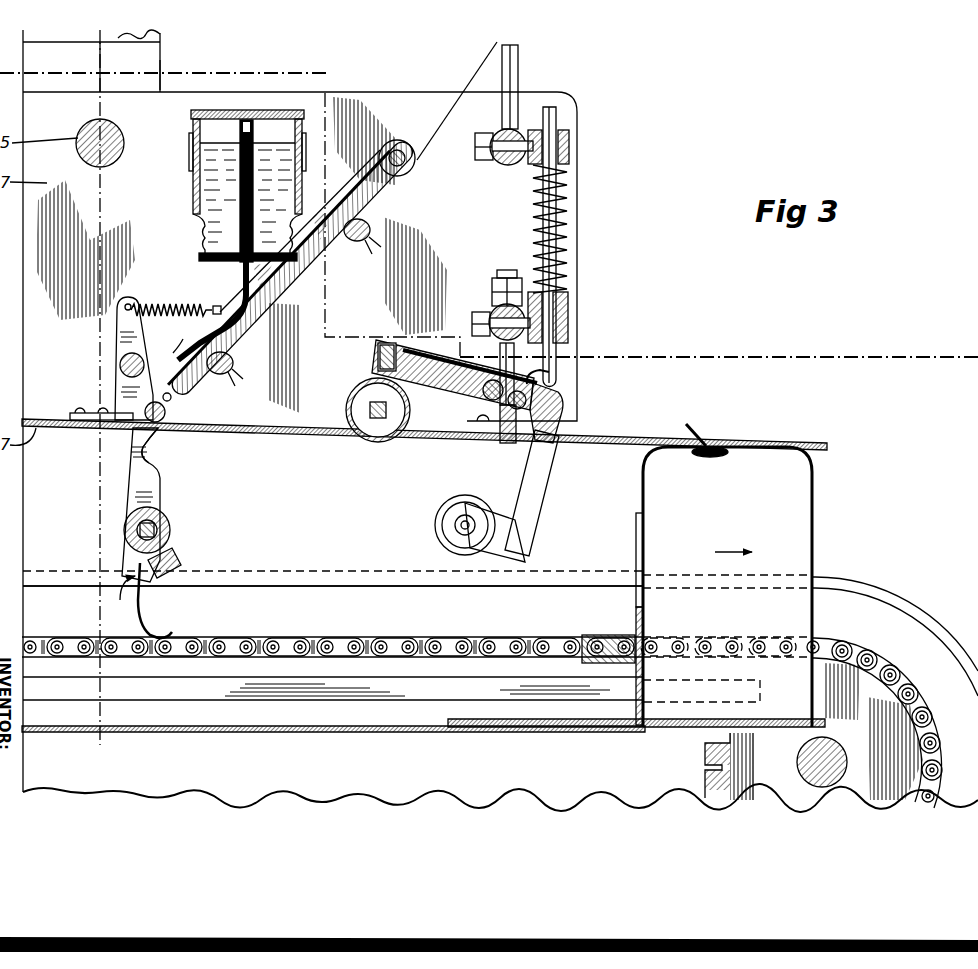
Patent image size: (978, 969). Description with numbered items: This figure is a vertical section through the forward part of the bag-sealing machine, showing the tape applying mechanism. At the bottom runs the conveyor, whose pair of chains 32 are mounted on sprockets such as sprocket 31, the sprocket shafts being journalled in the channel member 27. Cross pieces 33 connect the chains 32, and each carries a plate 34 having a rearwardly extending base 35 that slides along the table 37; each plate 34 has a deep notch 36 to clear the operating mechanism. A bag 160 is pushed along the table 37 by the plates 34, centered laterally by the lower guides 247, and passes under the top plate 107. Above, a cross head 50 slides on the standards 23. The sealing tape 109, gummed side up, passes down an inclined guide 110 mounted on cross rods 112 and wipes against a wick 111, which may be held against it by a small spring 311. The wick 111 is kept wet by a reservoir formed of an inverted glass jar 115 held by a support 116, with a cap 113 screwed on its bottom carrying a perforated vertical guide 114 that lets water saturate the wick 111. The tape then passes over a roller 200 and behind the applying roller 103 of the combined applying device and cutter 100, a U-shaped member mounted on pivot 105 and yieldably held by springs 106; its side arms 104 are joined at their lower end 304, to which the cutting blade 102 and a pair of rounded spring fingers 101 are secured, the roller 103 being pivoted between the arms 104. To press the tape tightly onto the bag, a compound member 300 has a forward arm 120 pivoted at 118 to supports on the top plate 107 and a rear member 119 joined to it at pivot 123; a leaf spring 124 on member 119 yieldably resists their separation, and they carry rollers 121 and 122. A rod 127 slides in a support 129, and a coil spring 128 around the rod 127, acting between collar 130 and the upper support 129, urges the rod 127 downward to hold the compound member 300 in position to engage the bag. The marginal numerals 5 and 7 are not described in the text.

The frame shaft 5 is at (100, 143).
The section line 7- 7 is at (99, 33).
The standards 23 is at (162, 36).
The cross head 50 is at (152, 59).
The inverted glass jar 115 is at (204, 112).
The support 116 is at (193, 149).
The vertical guide 114 is at (233, 190).
The cap 113 is at (201, 247).
The wick 111 is at (238, 297).
The tape 109 is at (443, 108).
The inclined guide 110 is at (392, 196).
The cross rods 112 is at (294, 310).
The springs 106 is at (176, 298).
The small spring 311 is at (200, 330).
The combined applying device and cutter 100 is at (164, 478).
The pivot 105 is at (119, 367).
The roller 200 is at (166, 412).
The side arms 104 is at (140, 460).
The roller 103 is at (168, 527).
The end 304 is at (165, 557).
The cutting blade 102 is at (117, 594).
The rounded spring fingers 101 is at (142, 622).
The top plate 107 is at (288, 437).
The roller 121 is at (384, 440).
The rear member 119 is at (378, 355).
The pivot 123 is at (483, 400).
The compound member 300 is at (562, 408).
The pivot 118 is at (512, 412).
The forward arm 120 is at (538, 481).
The roller 122 is at (437, 518).
The rod 127 is at (550, 353).
The coil spring 128 is at (563, 237).
The support 129 is at (568, 150).
The collar 130 is at (568, 297).
The leaf spring 124 is at (550, 370).
The bag 160 is at (802, 561).
The deep notch 36 is at (637, 538).
The plate 34 is at (637, 617).
The channel member 27 is at (587, 580).
The chains 32 is at (473, 637).
The cross pieces 33 is at (590, 635).
The lower guides 247 is at (343, 690).
The table 37 is at (214, 728).
The base 35 is at (537, 727).
The sprocket 31 is at (755, 762).